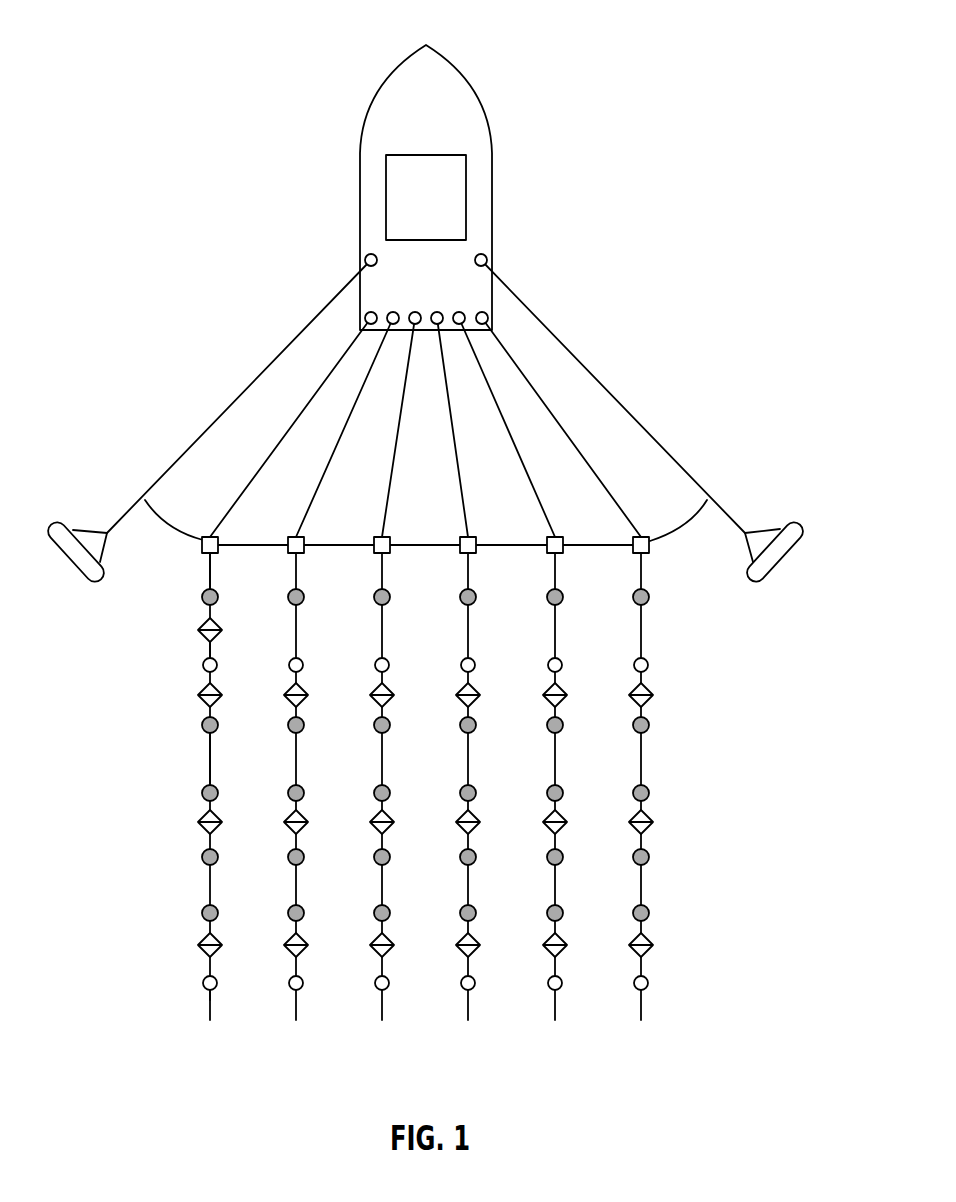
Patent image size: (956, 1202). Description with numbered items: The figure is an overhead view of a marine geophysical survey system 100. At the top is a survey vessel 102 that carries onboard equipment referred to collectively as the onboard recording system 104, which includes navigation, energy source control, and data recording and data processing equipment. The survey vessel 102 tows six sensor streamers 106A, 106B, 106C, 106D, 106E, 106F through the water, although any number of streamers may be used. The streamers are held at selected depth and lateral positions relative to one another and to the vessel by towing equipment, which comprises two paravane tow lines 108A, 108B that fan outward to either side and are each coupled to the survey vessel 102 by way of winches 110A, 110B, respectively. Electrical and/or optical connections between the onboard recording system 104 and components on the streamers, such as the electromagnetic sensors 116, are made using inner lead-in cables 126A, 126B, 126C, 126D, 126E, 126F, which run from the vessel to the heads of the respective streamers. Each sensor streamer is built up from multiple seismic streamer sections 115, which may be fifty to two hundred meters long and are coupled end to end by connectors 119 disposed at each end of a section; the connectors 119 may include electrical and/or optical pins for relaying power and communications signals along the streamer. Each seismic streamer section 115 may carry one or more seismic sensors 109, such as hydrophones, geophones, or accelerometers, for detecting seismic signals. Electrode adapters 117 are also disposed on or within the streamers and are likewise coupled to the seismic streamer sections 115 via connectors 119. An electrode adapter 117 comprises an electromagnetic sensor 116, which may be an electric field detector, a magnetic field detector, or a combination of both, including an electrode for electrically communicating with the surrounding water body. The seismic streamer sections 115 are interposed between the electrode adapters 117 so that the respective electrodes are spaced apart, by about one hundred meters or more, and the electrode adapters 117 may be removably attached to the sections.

The marine geophysical survey system 100 is at (124, 44).
The survey vessel 102 is at (382, 97).
The onboard recording system 104 is at (466, 183).
The sensor streamer 106A is at (208, 1020).
The sensor streamer 106B is at (294, 1020).
The sensor streamer 106C is at (380, 1020).
The sensor streamer 106D is at (466, 1020).
The sensor streamer 106E is at (553, 1020).
The sensor streamer 106F is at (639, 1020).
The paravane tow line 108A is at (318, 322).
The paravane tow line 108B is at (538, 325).
The seismic sensor 109 is at (202, 600).
The winch 110A is at (365, 257).
The winch 110B is at (487, 257).
The seismic streamer section 115 is at (203, 576).
The electromagnetic sensor 116 is at (203, 661).
The electrode adapter 117 is at (218, 650).
The connector 119 is at (199, 698).
The inner lead-in cable 126A is at (317, 398).
The inner lead-in cable 126B is at (333, 450).
The inner lead-in cable 126C is at (385, 519).
The inner lead-in cable 126D is at (466, 519).
The inner lead-in cable 126E is at (518, 452).
The inner lead-in cable 126F is at (537, 398).